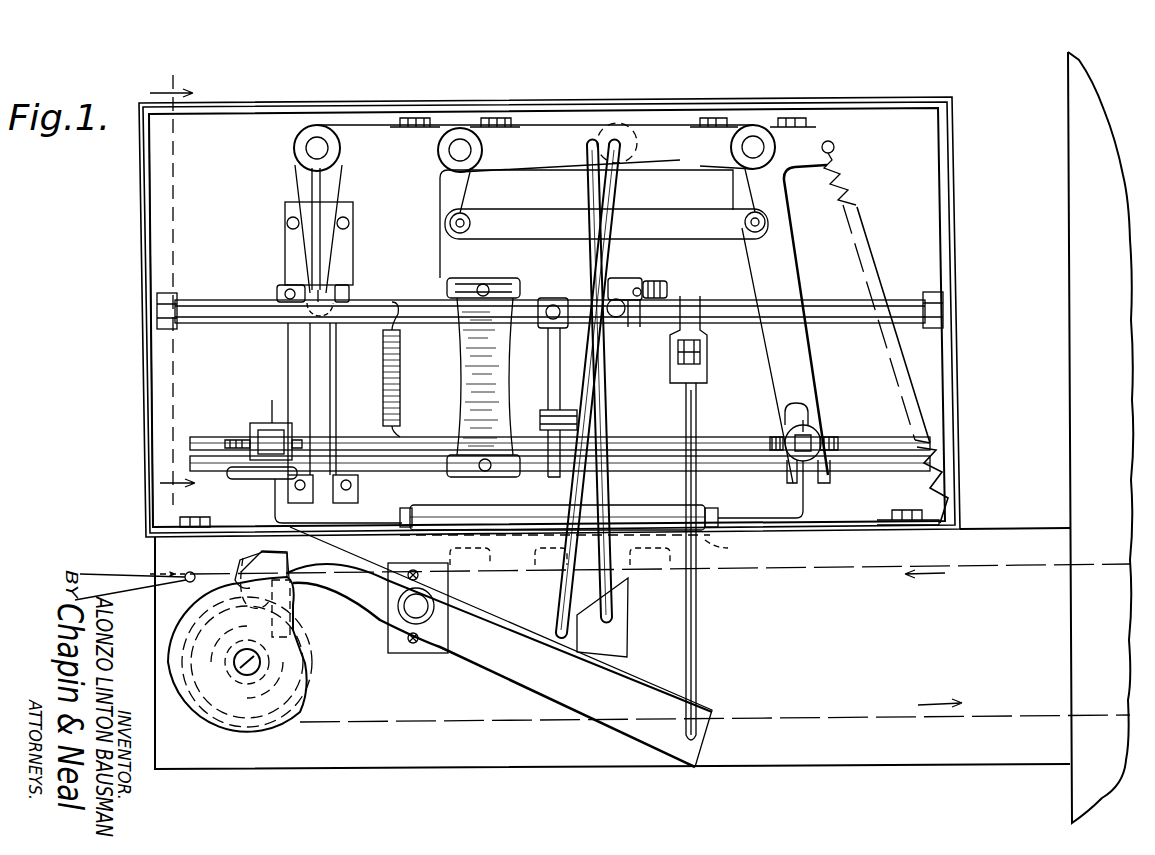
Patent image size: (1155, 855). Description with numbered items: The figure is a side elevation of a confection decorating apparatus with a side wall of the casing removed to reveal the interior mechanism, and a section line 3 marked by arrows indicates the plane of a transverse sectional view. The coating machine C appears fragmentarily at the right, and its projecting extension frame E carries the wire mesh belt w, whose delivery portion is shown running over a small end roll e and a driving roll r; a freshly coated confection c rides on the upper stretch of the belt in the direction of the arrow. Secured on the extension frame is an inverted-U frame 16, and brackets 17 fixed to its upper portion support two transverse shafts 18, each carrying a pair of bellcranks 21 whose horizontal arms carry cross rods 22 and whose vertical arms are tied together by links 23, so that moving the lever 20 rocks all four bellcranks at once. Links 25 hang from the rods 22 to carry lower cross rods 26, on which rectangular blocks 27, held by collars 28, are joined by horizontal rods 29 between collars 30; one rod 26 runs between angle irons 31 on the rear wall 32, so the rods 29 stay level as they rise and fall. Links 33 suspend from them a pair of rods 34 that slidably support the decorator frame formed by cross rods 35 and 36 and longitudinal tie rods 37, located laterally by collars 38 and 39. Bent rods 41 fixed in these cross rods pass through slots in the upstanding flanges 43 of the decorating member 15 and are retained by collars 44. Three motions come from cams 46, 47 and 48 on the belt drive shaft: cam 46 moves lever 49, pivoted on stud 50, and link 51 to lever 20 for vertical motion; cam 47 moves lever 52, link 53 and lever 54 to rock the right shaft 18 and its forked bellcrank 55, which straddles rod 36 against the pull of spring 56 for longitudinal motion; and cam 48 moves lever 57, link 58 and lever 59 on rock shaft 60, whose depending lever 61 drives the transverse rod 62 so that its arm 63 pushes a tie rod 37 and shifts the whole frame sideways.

The section line 3 is at (172, 285).
The decorating member 15 is at (731, 547).
The frame 16 is at (150, 150).
The brackets 17 is at (462, 118).
The shafts 18 is at (460, 150).
The lever 20 is at (535, 148).
The bellcranks 21 is at (740, 183).
The cross rod 22 is at (312, 148).
The links 23 is at (606, 204).
The links 25 is at (300, 185).
The cross rod 26 is at (330, 280).
The rectangular blocks 27 is at (305, 318).
The collar 28 is at (312, 290).
The rod 29 is at (447, 282).
The collars 30 is at (285, 290).
The angle irons 31 is at (330, 375).
The rear wall 32 is at (197, 378).
The links 33 is at (470, 372).
The rods 34 is at (447, 470).
The cross rod 35 is at (265, 428).
The cross rod 36 is at (838, 420).
The tie rods 37 is at (650, 445).
The collars 38 is at (252, 478).
The collars 39 is at (815, 405).
The right angularly bent rods 41 is at (275, 515).
The upstanding flanges 43 is at (555, 520).
The collars 44 is at (405, 508).
The cam 46 is at (300, 660).
The cam 47 is at (303, 640).
The cam 48 is at (290, 592).
The lever 49 is at (265, 555).
The stud 50 is at (430, 607).
The link connection 51 is at (614, 617).
The lever 52 is at (560, 605).
The link 53 is at (570, 636).
The lever 54 is at (645, 143).
The bellcrank 55 is at (825, 170).
The spring 56 is at (865, 205).
The lever 57 is at (499, 647).
The link 58 is at (697, 640).
The lever 59 is at (707, 355).
The rock shaft 60 is at (845, 322).
The depending lever 61 is at (549, 367).
The rod 62 is at (545, 412).
The arm 63 is at (560, 478).
The coating machine C is at (1100, 437).
The extension frame E is at (907, 676).
The wire mesh belt w is at (822, 567).
The confection c is at (660, 583).
The small end roll e is at (135, 571).
The driving roll r is at (305, 700).